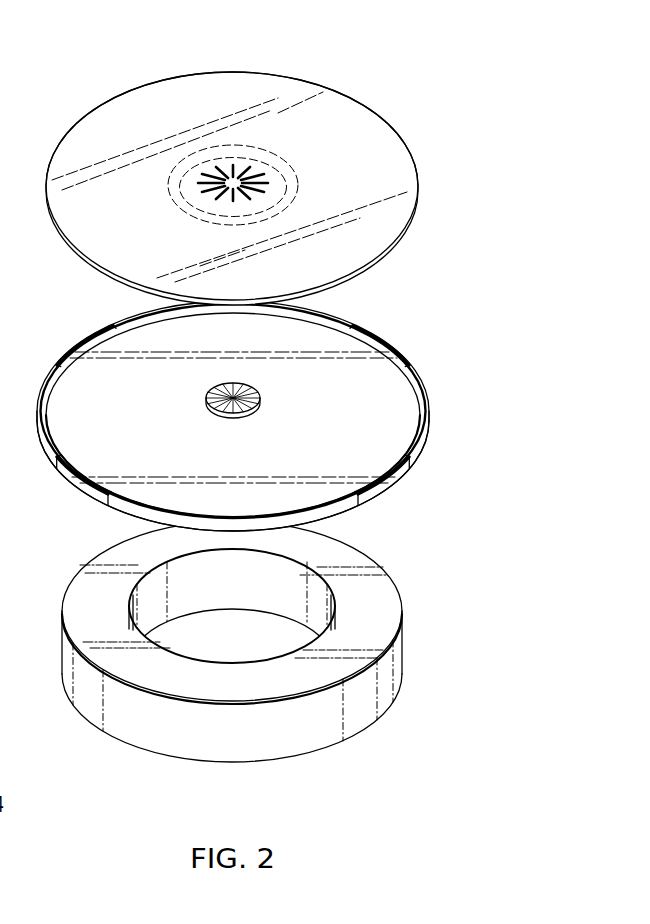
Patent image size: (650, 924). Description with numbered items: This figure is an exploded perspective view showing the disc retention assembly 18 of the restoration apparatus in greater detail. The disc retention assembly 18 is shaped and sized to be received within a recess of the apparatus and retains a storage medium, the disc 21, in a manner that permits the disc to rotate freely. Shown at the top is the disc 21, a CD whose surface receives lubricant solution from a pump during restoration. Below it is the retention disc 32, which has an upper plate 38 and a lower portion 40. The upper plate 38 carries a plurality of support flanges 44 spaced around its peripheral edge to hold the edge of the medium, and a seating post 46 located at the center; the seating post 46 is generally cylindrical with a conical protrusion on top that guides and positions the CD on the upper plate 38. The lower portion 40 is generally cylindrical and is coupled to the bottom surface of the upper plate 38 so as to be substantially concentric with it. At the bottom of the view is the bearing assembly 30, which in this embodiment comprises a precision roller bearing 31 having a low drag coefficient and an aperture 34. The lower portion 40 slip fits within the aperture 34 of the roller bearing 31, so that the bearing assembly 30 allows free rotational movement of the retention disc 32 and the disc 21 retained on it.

The disc retention assembly 18 is at (254, 391).
The disc 21 is at (280, 83).
The bearing assembly 30 is at (272, 649).
The roller bearing 31 is at (312, 735).
The retention disc 32 is at (254, 419).
The aperture 34 is at (298, 592).
The upper plate 38 is at (388, 400).
The lower portion 40 is at (160, 534).
The support flanges 44 is at (88, 332).
The seating post 46 is at (238, 420).